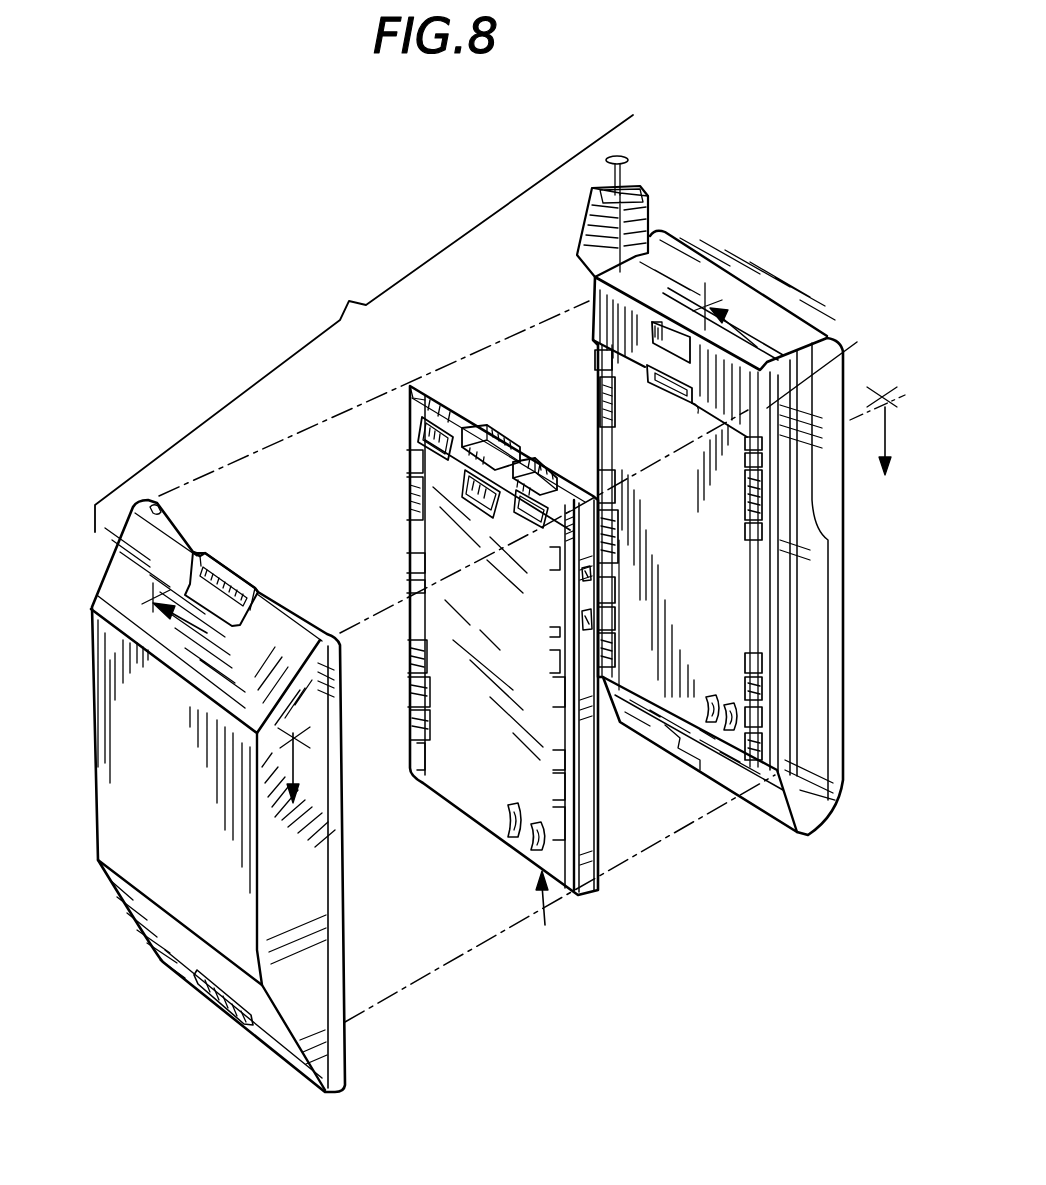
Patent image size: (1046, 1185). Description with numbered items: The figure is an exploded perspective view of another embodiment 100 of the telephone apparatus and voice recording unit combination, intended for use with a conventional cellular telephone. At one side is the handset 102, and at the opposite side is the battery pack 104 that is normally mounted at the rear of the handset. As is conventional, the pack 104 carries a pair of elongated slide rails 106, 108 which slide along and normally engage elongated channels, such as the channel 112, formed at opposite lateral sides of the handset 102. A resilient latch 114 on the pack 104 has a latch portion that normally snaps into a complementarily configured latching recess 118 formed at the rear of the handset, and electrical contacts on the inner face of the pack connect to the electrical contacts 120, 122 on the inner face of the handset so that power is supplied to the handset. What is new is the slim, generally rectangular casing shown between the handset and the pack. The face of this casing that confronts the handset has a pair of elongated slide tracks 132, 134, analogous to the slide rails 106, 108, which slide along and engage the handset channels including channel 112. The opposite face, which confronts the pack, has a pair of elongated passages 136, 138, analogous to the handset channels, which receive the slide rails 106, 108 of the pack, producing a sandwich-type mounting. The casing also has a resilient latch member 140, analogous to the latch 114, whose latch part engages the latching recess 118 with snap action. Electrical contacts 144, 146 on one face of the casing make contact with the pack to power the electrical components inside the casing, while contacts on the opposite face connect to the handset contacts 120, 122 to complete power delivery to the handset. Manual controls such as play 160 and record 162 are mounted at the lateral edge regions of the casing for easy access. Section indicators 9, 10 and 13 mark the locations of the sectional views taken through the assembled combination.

The embodiment 100 is at (488, 323).
The handset 102 is at (703, 250).
The battery pack 104 is at (92, 630).
The slide rail 106 is at (343, 668).
The slide rail 108 is at (160, 510).
The channel 112 is at (591, 280).
The resilient latch 114 is at (232, 576).
The latching recess 118 is at (662, 392).
The electrical contact 120 is at (735, 730).
The electrical contact 122 is at (713, 722).
The slide track 132 is at (580, 490).
The slide track 134 is at (430, 392).
The passage 136 is at (543, 467).
The passage 138 is at (410, 400).
The resilient latch member 140 is at (490, 437).
The electrical contact 144 is at (533, 843).
The electrical contact 146 is at (508, 833).
The play control 160 is at (591, 572).
The record control 162 is at (592, 621).
The section line 9 is at (591, 627).
The section line 10 is at (477, 466).
The section line 13 is at (551, 917).